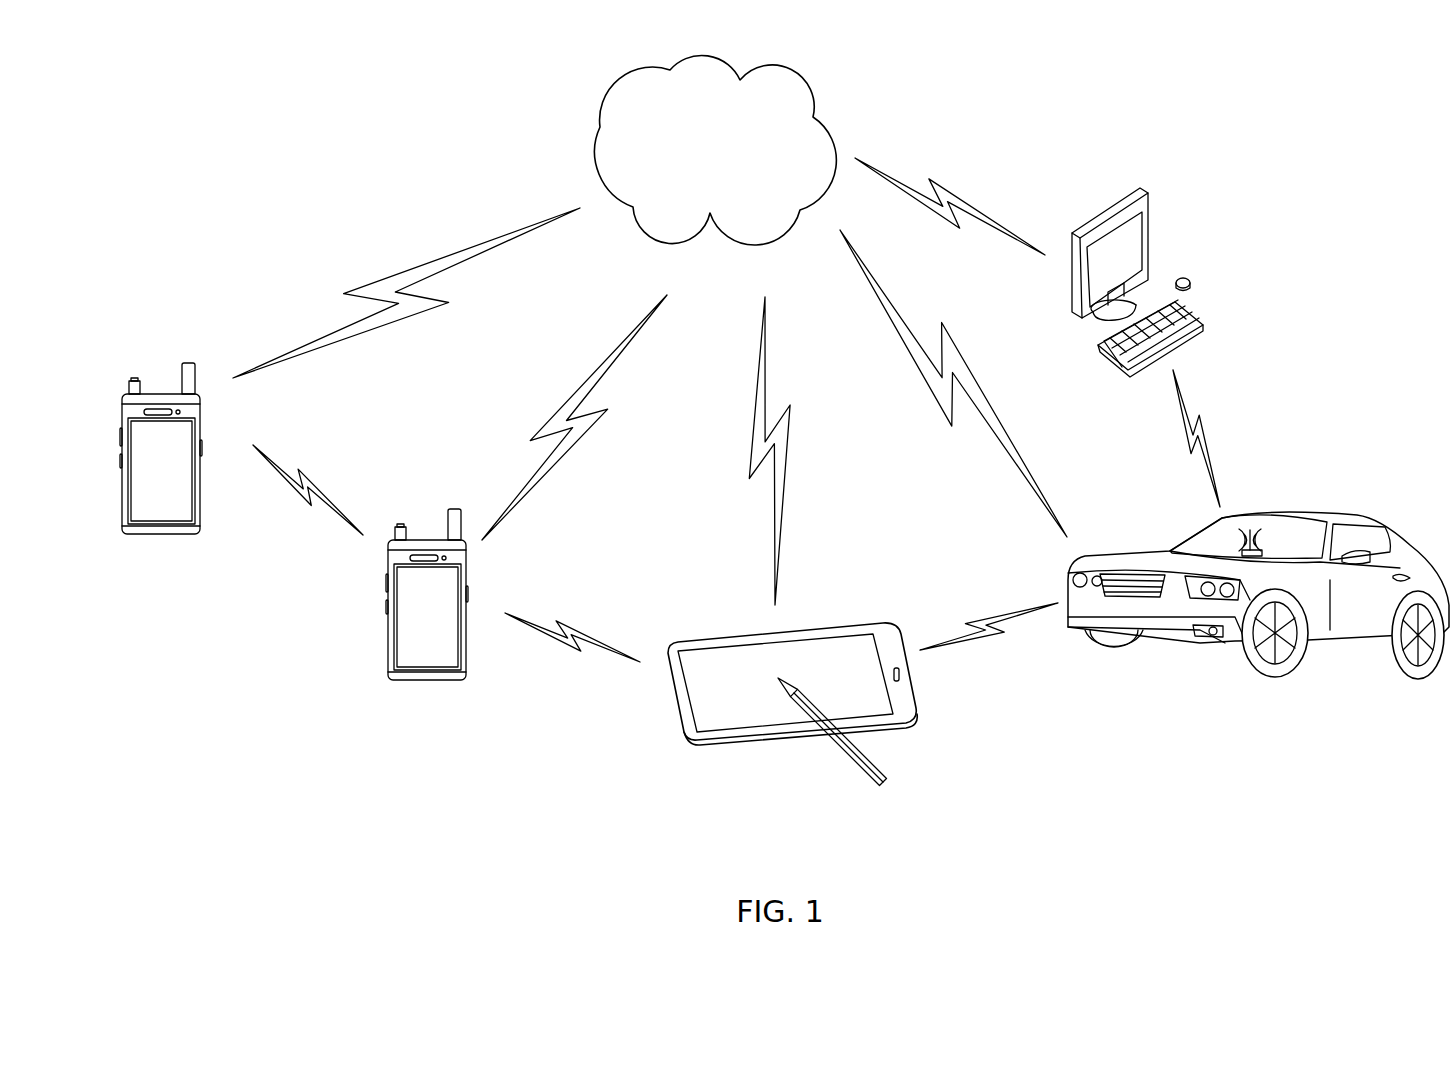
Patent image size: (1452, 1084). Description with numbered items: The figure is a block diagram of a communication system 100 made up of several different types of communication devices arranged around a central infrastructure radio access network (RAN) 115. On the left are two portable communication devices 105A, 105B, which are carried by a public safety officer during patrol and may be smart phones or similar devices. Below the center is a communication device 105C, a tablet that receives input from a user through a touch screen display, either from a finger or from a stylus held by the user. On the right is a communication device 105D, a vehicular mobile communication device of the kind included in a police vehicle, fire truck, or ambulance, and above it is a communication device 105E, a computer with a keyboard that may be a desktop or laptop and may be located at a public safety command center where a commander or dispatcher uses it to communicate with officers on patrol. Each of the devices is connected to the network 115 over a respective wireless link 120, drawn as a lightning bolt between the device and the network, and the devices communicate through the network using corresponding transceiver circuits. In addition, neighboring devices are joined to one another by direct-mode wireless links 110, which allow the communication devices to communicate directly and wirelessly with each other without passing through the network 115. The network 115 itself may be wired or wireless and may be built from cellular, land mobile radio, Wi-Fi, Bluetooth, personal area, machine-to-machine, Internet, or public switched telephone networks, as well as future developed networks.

The communication system 100 is at (238, 121).
The communication device 105A is at (160, 537).
The communication device 105B is at (425, 682).
The communication device 105C is at (742, 745).
The communication device 105D is at (1265, 545).
The communication device 105E is at (1143, 190).
The direct-mode wireless link 110 is at (310, 478).
The infrastructure radio access network (RAN) 115 is at (597, 176).
The wireless link 120 is at (358, 285).